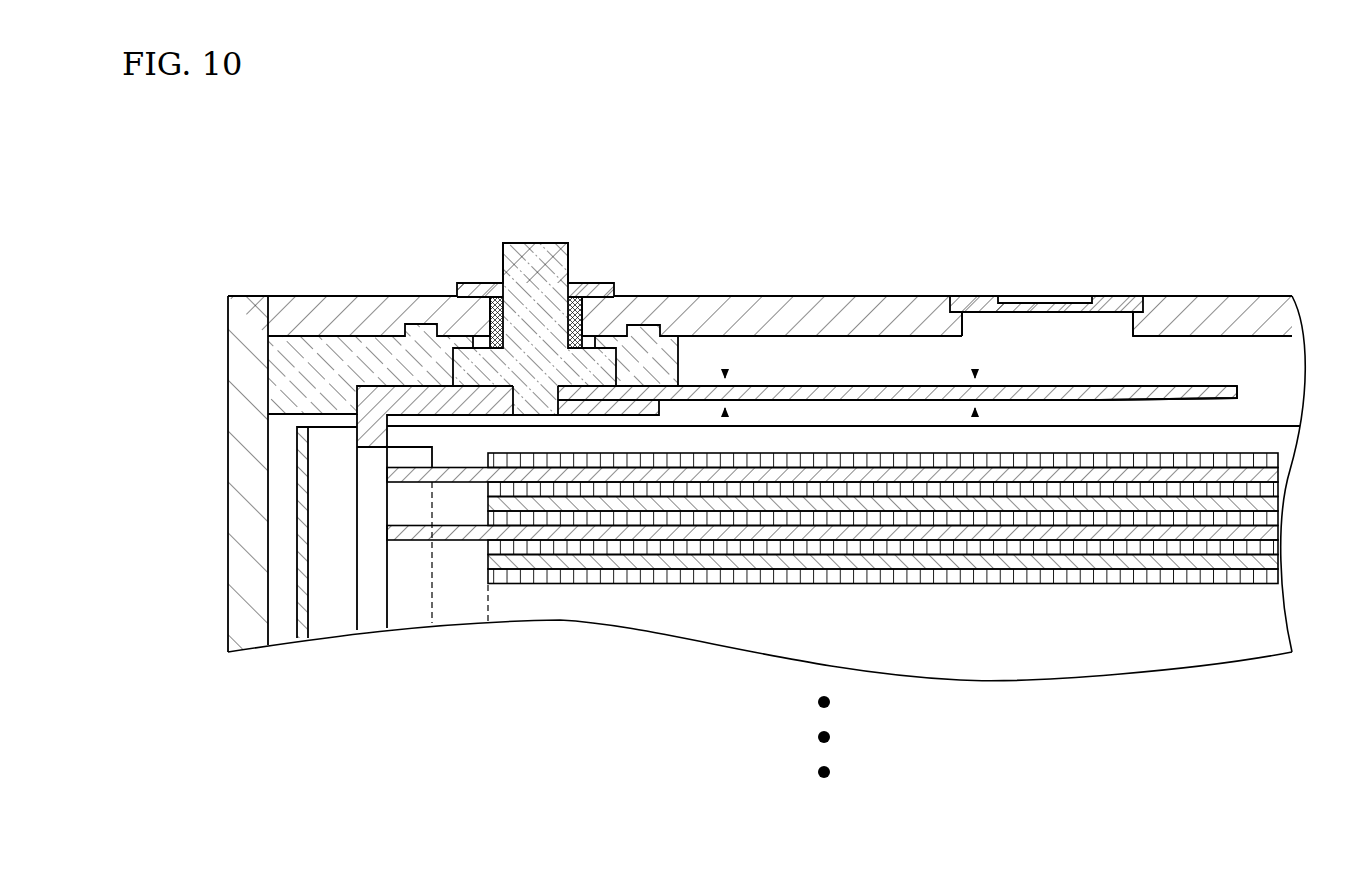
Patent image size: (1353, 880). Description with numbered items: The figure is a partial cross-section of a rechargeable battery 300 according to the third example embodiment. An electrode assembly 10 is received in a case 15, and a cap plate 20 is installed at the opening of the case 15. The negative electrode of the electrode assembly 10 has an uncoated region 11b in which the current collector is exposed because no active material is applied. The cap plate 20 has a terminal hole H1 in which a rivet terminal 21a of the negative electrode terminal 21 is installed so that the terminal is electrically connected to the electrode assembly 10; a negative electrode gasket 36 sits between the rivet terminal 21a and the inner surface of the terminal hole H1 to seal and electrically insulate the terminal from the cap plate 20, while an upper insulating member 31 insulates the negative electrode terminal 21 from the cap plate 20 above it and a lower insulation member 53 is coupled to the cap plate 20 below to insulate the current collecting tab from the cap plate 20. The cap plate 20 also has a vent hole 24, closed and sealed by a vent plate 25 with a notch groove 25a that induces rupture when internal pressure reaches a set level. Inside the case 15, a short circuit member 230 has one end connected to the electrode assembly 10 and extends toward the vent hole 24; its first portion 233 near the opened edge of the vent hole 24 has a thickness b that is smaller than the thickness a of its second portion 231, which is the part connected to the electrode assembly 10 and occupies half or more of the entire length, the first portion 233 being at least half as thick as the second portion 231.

The rechargeable battery 300 is at (813, 134).
The electrode assembly 10 is at (1023, 600).
The uncoated region 11b is at (455, 532).
The case 15 is at (250, 508).
The cap plate 20 is at (782, 315).
The negative electrode terminal 21 is at (549, 233).
The rivet terminal 21a is at (540, 405).
The vent hole 24 is at (982, 328).
The vent plate 25 is at (1135, 298).
The notch groove 25a is at (1093, 302).
The upper insulating member 31 is at (592, 287).
The negative electrode gasket 36 is at (495, 320).
The lower insulation member 53 is at (302, 362).
The short circuit member 230 is at (868, 372).
The second portion 231 is at (702, 393).
The first portion 233 is at (1018, 390).
The terminal hole H1 is at (500, 308).